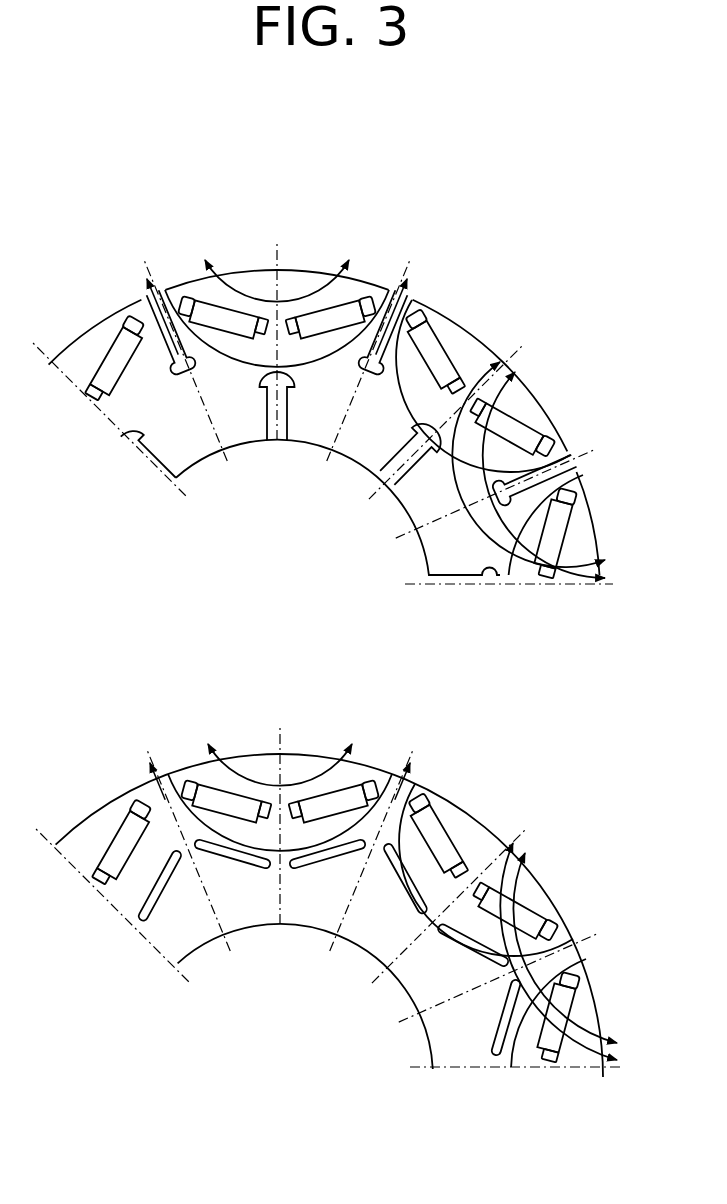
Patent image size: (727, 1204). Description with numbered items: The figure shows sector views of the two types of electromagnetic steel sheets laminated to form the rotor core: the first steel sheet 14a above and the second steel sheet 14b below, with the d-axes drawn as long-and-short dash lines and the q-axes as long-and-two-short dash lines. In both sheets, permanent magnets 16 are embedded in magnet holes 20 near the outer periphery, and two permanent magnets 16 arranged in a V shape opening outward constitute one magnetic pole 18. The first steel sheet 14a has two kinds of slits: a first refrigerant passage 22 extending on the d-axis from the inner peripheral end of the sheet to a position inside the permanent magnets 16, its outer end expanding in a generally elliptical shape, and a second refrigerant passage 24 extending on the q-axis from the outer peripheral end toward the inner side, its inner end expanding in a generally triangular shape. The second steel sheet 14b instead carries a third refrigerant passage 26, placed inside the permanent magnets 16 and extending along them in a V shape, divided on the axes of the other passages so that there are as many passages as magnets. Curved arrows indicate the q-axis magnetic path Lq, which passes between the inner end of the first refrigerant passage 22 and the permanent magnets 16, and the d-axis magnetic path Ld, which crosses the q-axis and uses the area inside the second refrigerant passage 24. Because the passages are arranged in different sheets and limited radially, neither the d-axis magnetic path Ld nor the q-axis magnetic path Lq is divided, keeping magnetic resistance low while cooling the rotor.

The first steel sheet 14a is at (110, 250).
The second steel sheet 14b is at (117, 735).
The permanent magnet 16 is at (307, 312).
The magnetic pole 18 is at (298, 190).
The magnet hole 20 is at (130, 321).
The first refrigerant passage 22 is at (276, 440).
The second refrigerant passage 24 is at (401, 292).
The third refrigerant passage 26 is at (313, 859).
The q-axis magnetic path Lq is at (364, 290).
The d-axis magnetic path Ld is at (577, 488).